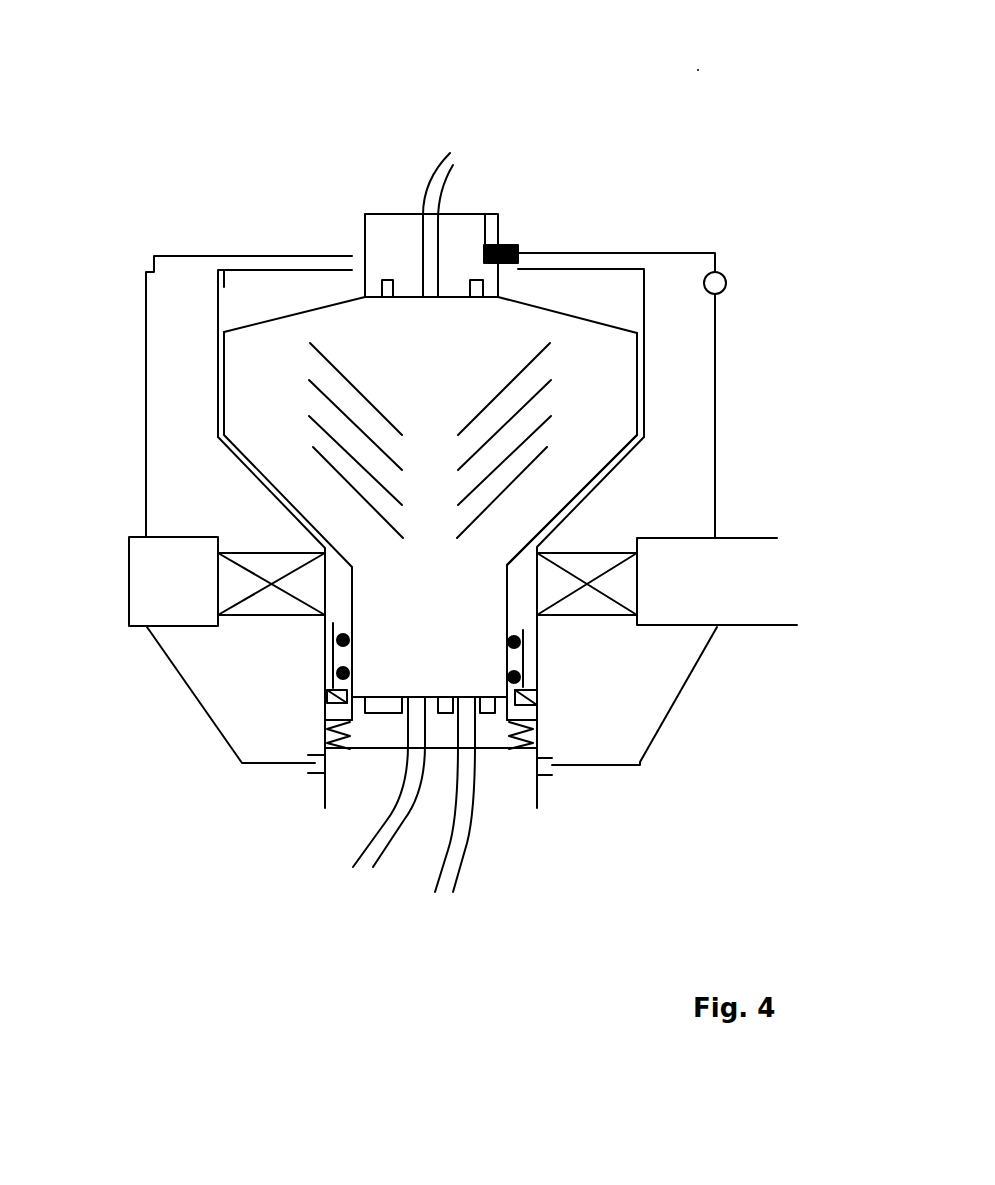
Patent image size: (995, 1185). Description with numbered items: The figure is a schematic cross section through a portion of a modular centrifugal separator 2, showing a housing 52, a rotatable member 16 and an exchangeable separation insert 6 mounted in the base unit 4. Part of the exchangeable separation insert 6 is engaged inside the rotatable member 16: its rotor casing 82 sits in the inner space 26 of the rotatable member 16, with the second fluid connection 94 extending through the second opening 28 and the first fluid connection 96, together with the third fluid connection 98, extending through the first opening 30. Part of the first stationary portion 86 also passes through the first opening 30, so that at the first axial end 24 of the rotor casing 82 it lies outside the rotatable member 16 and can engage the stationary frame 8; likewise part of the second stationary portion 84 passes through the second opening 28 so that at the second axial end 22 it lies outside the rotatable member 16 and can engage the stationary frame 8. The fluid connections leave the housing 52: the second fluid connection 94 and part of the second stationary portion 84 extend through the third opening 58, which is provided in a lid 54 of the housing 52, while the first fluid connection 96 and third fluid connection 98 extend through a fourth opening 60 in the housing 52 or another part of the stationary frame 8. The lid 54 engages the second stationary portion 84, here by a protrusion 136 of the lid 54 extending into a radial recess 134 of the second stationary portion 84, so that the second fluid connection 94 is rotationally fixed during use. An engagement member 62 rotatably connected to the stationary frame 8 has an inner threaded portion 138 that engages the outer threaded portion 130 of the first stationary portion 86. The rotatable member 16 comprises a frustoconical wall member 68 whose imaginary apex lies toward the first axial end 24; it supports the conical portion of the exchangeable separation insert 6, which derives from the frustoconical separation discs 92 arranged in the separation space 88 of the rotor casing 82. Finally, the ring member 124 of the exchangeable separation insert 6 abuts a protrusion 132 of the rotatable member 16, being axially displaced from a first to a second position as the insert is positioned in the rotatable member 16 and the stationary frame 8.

The modular centrifugal separator 2 is at (698, 70).
The base unit 4 is at (742, 715).
The exchangeable separation insert 6 is at (263, 370).
The stationary frame 8 is at (730, 571).
The rotatable member 16 is at (210, 410).
The second axial end 22 is at (213, 282).
The first axial end 24 is at (275, 653).
The inner space 26 is at (613, 303).
The second opening 28 is at (515, 270).
The first opening 30 is at (325, 708).
The housing 52 is at (717, 360).
The lid 54 is at (222, 256).
The third opening 58 is at (352, 242).
The fourth opening 60 is at (347, 806).
The engagement member 62 is at (537, 785).
The frustoconical wall member 68 is at (577, 508).
The rotor casing 82 is at (637, 402).
The second stationary portion 84 is at (386, 225).
The first stationary portion 86 is at (380, 745).
The separation space 88 is at (572, 423).
The separation discs 92 is at (498, 387).
The second fluid connection 94 is at (430, 188).
The first fluid connection 96 is at (385, 835).
The third fluid connection 98 is at (463, 837).
The ring member 124 is at (523, 672).
The outer threaded portion 130 is at (330, 735).
The protrusion 132 is at (325, 700).
The radial recess 134 is at (497, 223).
The protrusion 136 is at (512, 245).
The inner threaded portion 138 is at (508, 740).